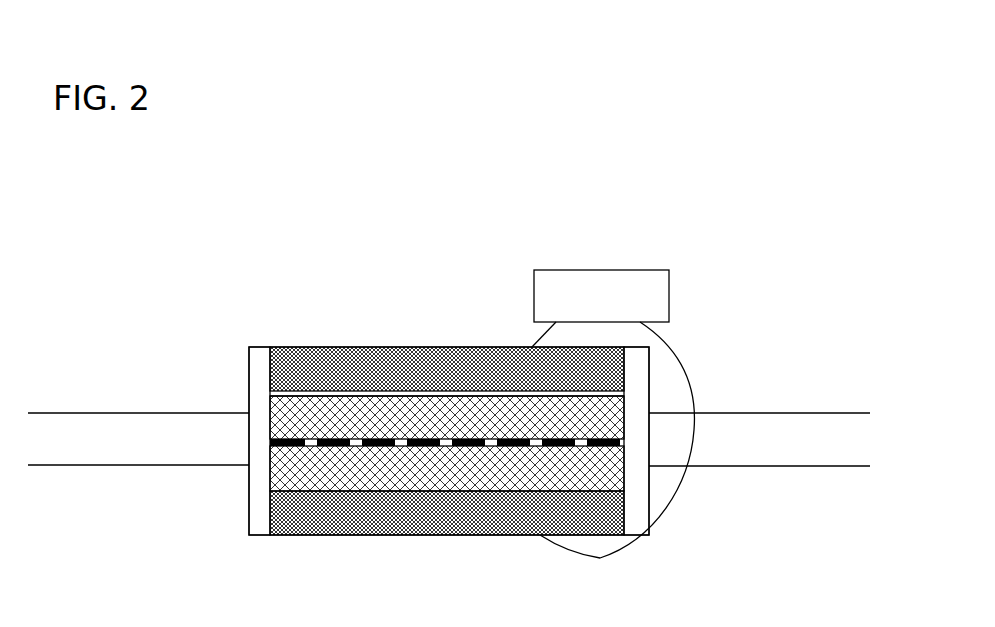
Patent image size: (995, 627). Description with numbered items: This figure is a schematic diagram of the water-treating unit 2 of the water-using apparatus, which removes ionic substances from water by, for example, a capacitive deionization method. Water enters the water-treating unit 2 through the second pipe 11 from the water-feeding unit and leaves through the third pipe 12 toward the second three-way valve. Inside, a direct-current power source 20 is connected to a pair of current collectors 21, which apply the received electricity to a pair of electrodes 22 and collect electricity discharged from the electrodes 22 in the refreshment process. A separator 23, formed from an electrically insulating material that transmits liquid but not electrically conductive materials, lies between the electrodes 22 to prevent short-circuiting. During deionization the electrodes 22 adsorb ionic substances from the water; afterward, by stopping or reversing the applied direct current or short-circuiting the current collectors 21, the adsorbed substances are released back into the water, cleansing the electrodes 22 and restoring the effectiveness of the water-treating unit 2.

The water-treating unit 2 is at (727, 305).
The second pipe 11 is at (167, 413).
The third pipe 12 is at (803, 413).
The direct-current power source 20 is at (612, 414).
The current collectors 21 is at (368, 347).
The electrodes 22 is at (258, 401).
The separator 23 is at (471, 446).